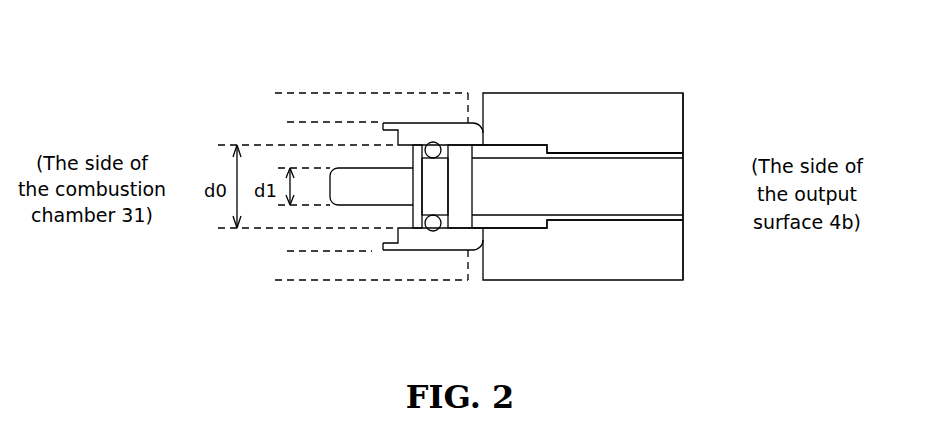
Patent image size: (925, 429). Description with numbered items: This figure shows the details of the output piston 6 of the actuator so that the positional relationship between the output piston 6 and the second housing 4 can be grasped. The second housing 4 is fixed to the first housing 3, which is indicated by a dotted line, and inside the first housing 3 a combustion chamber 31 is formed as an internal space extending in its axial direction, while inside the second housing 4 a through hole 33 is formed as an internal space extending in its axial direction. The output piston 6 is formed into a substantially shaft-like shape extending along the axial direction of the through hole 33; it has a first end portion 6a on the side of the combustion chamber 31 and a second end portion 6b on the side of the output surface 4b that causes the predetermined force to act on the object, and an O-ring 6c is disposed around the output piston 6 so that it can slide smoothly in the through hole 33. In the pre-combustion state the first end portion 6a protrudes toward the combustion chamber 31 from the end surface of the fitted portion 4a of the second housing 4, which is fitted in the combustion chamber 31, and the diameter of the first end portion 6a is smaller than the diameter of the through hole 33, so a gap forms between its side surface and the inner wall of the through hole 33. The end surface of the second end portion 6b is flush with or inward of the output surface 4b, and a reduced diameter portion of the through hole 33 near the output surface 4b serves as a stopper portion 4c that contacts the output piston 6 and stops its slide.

The first housing 3 is at (303, 272).
The combustion chamber 31 is at (325, 137).
The second housing 4 is at (505, 253).
The fitted portion 4a is at (381, 247).
The output surface 4b is at (685, 260).
The stopper portion 4c is at (667, 148).
The output piston 6 is at (460, 155).
The first end portion 6a is at (352, 182).
The second end portion 6b is at (618, 168).
The O-ring 6c is at (430, 147).
The through hole 33 is at (525, 152).